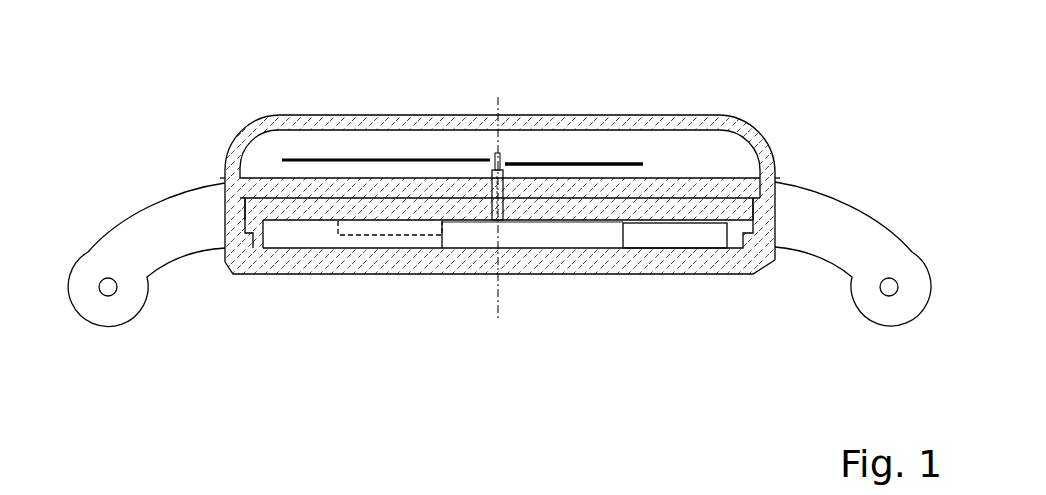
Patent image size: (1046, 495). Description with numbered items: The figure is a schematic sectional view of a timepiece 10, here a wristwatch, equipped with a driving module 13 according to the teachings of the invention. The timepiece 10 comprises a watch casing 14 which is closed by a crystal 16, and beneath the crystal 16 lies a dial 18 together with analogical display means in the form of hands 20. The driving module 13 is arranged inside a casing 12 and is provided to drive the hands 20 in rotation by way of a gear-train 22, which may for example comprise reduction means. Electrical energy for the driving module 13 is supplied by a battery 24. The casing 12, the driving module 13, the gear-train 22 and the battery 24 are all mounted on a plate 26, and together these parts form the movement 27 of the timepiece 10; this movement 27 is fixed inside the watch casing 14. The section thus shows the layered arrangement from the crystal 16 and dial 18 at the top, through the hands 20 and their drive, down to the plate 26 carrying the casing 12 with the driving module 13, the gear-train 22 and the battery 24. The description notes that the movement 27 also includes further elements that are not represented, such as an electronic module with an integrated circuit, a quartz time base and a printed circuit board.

The timepiece 10 is at (291, 60).
The casing 12 is at (355, 252).
The driving module 13 is at (422, 252).
The watch casing 14 is at (230, 273).
The crystal 16 is at (760, 118).
The dial 18 is at (662, 188).
The hands 20 is at (473, 157).
The gear-train 22 is at (557, 236).
The battery 24 is at (668, 236).
The plate 26 is at (707, 210).
The movement 27 is at (769, 220).